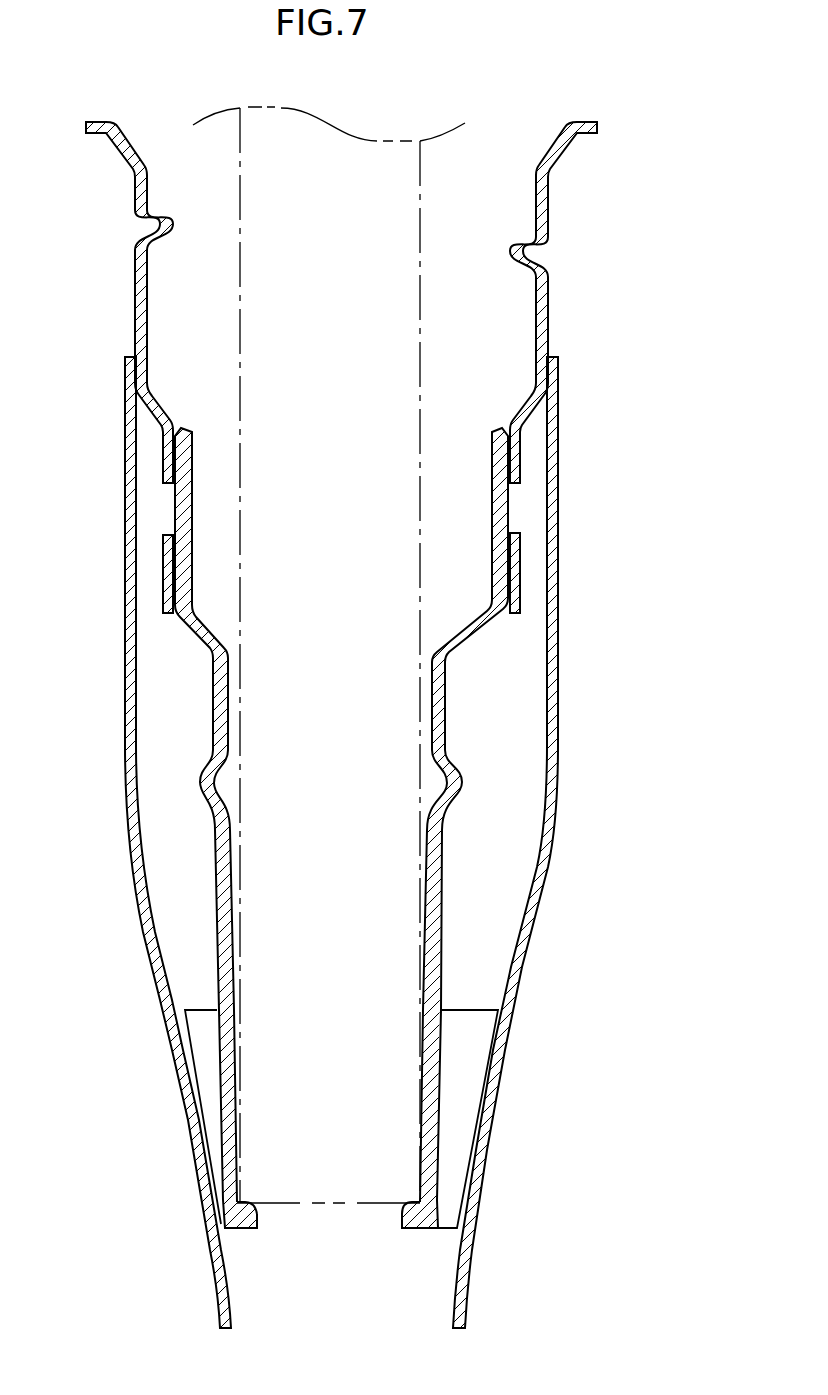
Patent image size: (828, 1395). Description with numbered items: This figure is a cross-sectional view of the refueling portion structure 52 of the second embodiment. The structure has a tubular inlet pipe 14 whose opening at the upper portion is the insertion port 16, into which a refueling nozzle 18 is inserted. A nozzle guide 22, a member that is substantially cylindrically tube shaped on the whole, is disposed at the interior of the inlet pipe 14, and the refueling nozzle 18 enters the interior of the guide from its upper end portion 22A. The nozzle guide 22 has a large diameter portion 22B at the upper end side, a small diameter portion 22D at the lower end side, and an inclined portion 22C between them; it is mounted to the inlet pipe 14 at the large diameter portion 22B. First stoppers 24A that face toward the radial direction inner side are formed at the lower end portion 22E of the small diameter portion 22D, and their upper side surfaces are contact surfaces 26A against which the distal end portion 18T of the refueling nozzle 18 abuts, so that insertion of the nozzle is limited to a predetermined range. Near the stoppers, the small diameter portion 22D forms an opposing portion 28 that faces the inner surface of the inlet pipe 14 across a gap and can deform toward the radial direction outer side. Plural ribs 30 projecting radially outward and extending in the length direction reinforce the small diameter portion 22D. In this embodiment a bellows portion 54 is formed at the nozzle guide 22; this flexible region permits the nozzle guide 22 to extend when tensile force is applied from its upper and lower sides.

The inlet pipe 14 is at (140, 938).
The insertion port 16 is at (135, 152).
The refueling nozzle 18 is at (430, 170).
The distal end portion 18T is at (270, 1205).
The nozzle guide 22 is at (204, 695).
The upper end portion 22A is at (188, 438).
The large diameter portion 22B is at (498, 502).
The inclined portion 22C is at (472, 623).
The small diameter portion 22D is at (443, 900).
The lower end portion 22E is at (432, 1229).
The first stopper 24A is at (250, 1229).
The contact surface 26A is at (250, 1204).
The opposing portion 28 is at (223, 1128).
The rib 30 is at (202, 1035).
The refueling portion structure 52 is at (627, 99).
The bellows portion 54 is at (460, 787).